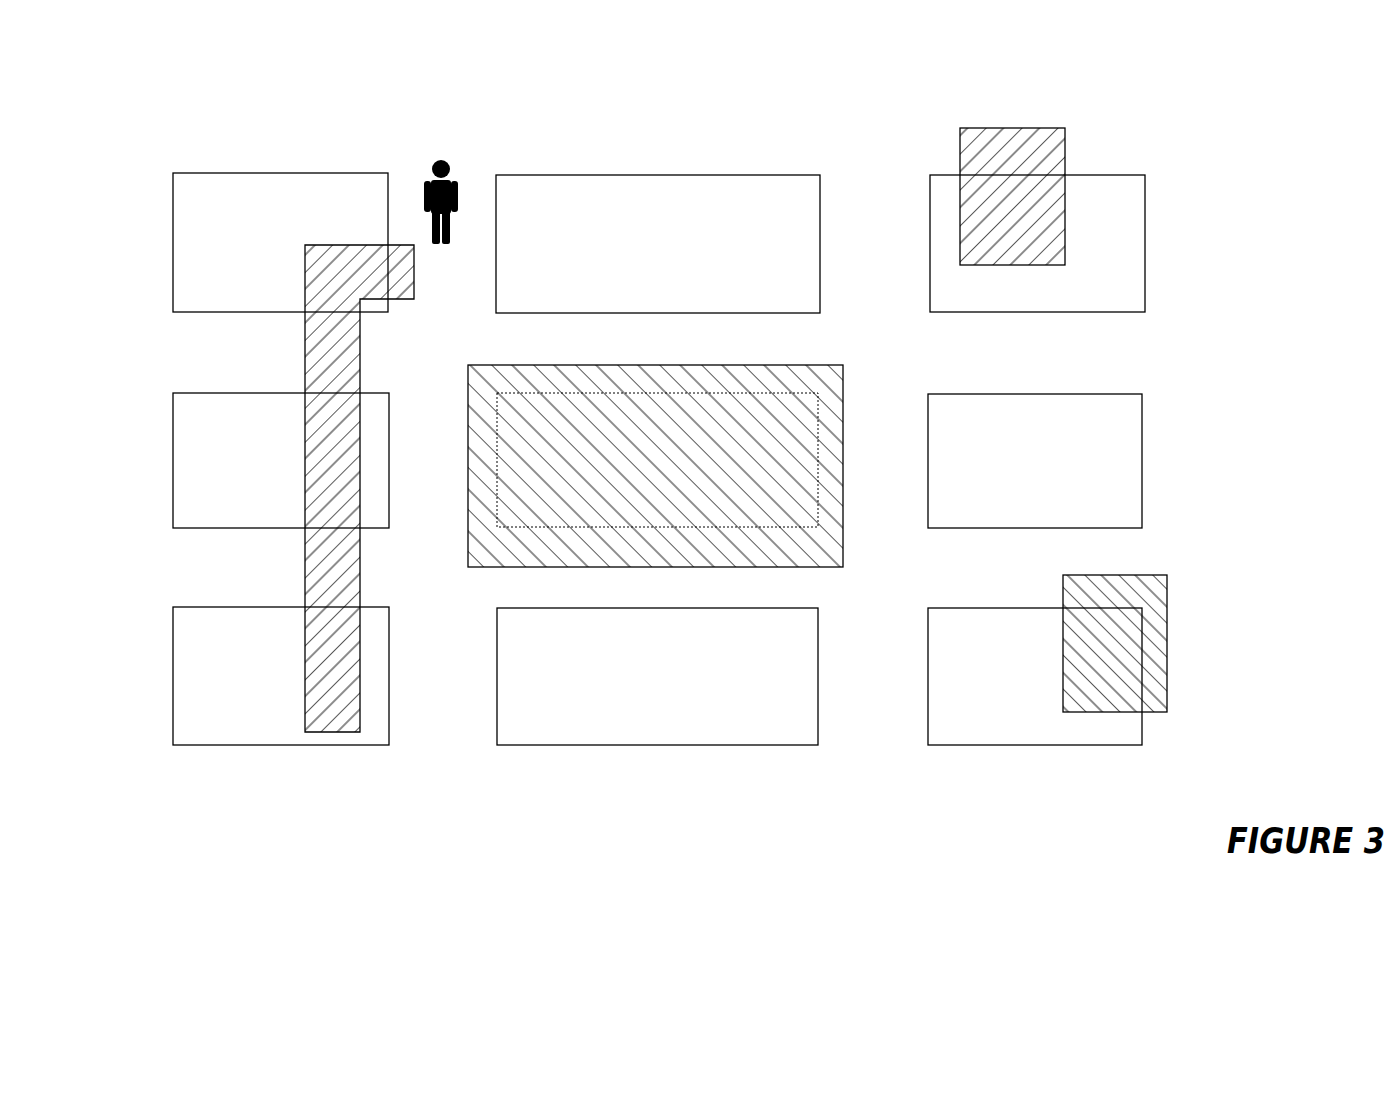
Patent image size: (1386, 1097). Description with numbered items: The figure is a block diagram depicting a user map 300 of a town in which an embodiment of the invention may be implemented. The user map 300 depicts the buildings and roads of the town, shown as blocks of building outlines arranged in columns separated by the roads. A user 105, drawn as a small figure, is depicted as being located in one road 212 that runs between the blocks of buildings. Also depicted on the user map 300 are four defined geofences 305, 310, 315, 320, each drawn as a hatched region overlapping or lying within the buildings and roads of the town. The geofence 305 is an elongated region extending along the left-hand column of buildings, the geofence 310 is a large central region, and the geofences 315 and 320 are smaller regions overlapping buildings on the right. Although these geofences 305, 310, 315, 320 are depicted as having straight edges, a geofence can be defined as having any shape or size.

The user map 300 is at (170, 130).
The user 105 is at (455, 160).
The geofence 305 is at (305, 348).
The geofence 310 is at (835, 365).
The geofence 315 is at (960, 150).
The geofence 320 is at (1167, 640).
The road 212 is at (427, 747).